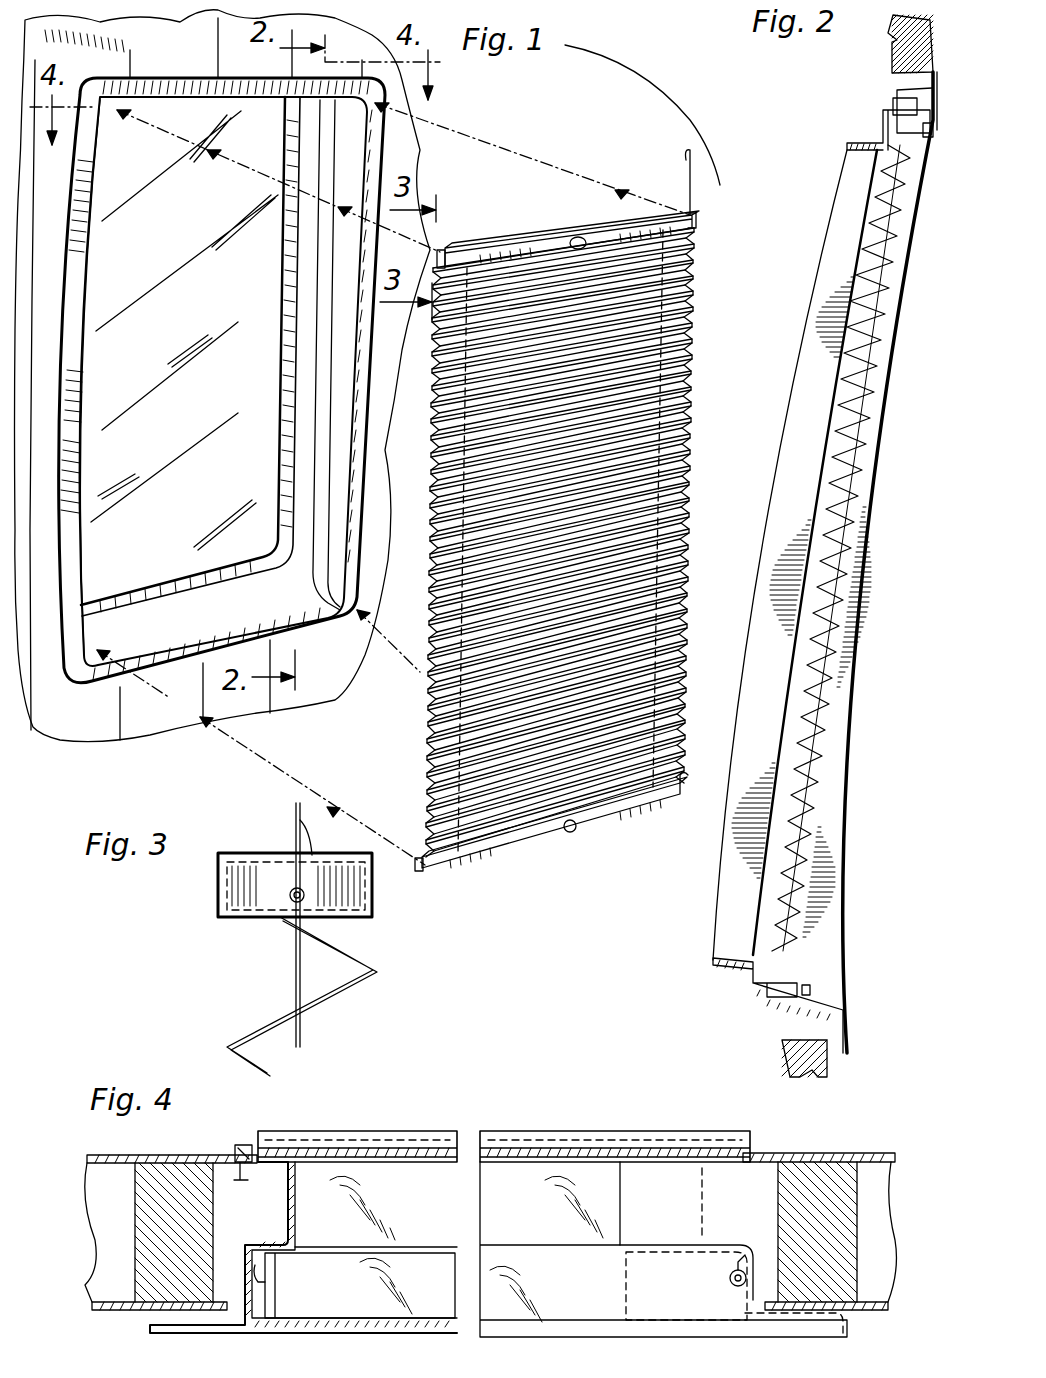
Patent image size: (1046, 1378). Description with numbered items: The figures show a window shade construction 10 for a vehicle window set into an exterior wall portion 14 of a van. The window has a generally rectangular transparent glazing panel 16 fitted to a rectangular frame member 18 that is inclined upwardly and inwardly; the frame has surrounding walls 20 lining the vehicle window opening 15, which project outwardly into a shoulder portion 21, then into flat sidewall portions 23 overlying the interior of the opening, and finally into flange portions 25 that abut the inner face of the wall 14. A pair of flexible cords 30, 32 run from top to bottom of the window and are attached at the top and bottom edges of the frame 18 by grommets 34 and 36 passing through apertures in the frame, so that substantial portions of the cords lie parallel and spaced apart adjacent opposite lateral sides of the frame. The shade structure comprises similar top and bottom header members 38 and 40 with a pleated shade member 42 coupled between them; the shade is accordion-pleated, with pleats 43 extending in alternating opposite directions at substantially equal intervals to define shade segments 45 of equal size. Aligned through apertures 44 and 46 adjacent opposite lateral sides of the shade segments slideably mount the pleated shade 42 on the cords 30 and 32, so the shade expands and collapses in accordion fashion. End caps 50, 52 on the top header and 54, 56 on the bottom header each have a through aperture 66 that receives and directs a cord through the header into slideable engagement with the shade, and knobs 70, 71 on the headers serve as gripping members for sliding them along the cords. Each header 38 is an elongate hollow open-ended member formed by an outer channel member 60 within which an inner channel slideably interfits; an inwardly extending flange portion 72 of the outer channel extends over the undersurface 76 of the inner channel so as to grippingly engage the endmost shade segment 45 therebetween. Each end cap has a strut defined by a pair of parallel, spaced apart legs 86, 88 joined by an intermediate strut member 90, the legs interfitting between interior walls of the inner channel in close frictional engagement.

In FIG. 1, the window shade construction 10 is at (559, 540).
In FIG. 2, the window shade construction 10 is at (875, 630).
In FIG. 4, the window shade construction 10 is at (405, 1325).
In FIG. 1, the exterior wall portion 14 is at (192, 53).
In FIG. 2, the exterior wall portion 14 is at (892, 55).
In FIG. 4, the exterior wall portion 14 is at (110, 1280).
In FIG. 4, the vehicle window opening 15 is at (240, 1143).
In FIG. 1, the transparent glazing panel 16 is at (182, 230).
In FIG. 4, the transparent glazing panel 16 is at (360, 1130).
In FIG. 1, the frame member 18 is at (93, 240).
In FIG. 2, the frame member 18 is at (895, 90).
In FIG. 4, the frame member 18 is at (125, 1328).
In FIG. 1, the surrounding walls 20 is at (305, 100).
In FIG. 2, the surrounding walls 20 is at (812, 325).
In FIG. 4, the surrounding walls 20 is at (290, 1175).
In FIG. 1, the shoulder portion 21 is at (300, 302).
In FIG. 2, the shoulder portion 21 is at (858, 265).
In FIG. 4, the shoulder portion 21 is at (262, 1245).
In FIG. 1, the sidewall portions 23 is at (315, 395).
In FIG. 2, the sidewall portions 23 is at (870, 213).
In FIG. 4, the sidewall portions 23 is at (252, 1310).
In FIG. 1, the flange portions 25 is at (355, 473).
In FIG. 2, the flange portions 25 is at (845, 880).
In FIG. 4, the flange portions 25 is at (150, 1330).
In FIG. 1, the flexible cord 30 is at (447, 250).
In FIG. 2, the flexible cord 30 is at (888, 378).
In FIG. 3, the flexible cord 30 is at (303, 1045).
In FIG. 4, the flexible cord 30 is at (268, 1268).
In FIG. 1, the flexible cord 32 is at (672, 845).
In FIG. 3, the flexible cord 32 is at (295, 812).
In FIG. 2, the grommet 34 is at (893, 102).
In FIG. 4, the grommet 34 is at (748, 1260).
In FIG. 2, the grommet 36 is at (765, 1010).
In FIG. 1, the top header member 38 is at (690, 215).
In FIG. 2, the top header member 38 is at (880, 118).
In FIG. 3, the top header member 38 is at (218, 893).
In FIG. 4, the top header member 38 is at (562, 1289).
In FIG. 1, the bottom header member 40 is at (512, 862).
In FIG. 2, the bottom header member 40 is at (762, 988).
In FIG. 1, the pleated shade member 42 is at (440, 700).
In FIG. 2, the pleated shade member 42 is at (880, 440).
In FIG. 3, the pleated shade member 42 is at (225, 1040).
In FIG. 3, the pleats 43 is at (375, 970).
In FIG. 1, the through apertures 44 is at (430, 745).
In FIG. 3, the shade segments 45 is at (258, 1035).
In FIG. 1, the through apertures 46 is at (685, 500).
In FIG. 1, the end cap 50 is at (445, 290).
In FIG. 4, the end cap 50 is at (270, 1298).
In FIG. 1, the end cap 52 is at (719, 197).
In FIG. 3, the end cap 52 is at (238, 915).
In FIG. 1, the end cap 54 is at (440, 875).
In FIG. 1, the end cap 56 is at (690, 772).
In FIG. 3, the outer channel member 60 is at (248, 862).
In FIG. 3, the through aperture 66 is at (275, 912).
In FIG. 1, the knob 70 is at (575, 237).
In FIG. 1, the knob 71 is at (574, 832).
In FIG. 2, the knob 71 is at (812, 995).
In FIG. 2, the inwardly extending flange portion 72 is at (934, 227).
In FIG. 3, the undersurface 76 is at (232, 906).
In FIG. 3, the leg 86 is at (330, 905).
In FIG. 3, the leg 88 is at (290, 900).
In FIG. 3, the intermediate strut member 90 is at (328, 835).